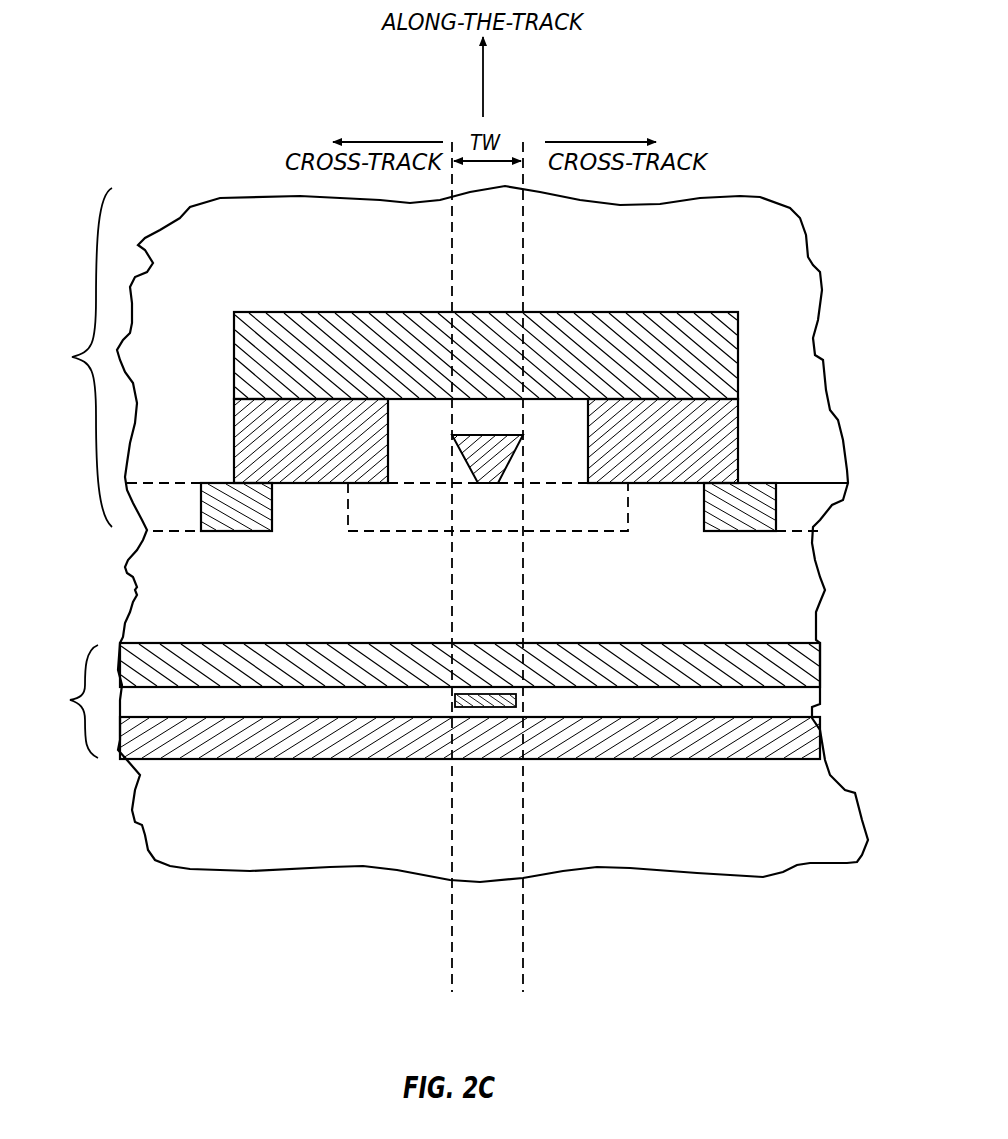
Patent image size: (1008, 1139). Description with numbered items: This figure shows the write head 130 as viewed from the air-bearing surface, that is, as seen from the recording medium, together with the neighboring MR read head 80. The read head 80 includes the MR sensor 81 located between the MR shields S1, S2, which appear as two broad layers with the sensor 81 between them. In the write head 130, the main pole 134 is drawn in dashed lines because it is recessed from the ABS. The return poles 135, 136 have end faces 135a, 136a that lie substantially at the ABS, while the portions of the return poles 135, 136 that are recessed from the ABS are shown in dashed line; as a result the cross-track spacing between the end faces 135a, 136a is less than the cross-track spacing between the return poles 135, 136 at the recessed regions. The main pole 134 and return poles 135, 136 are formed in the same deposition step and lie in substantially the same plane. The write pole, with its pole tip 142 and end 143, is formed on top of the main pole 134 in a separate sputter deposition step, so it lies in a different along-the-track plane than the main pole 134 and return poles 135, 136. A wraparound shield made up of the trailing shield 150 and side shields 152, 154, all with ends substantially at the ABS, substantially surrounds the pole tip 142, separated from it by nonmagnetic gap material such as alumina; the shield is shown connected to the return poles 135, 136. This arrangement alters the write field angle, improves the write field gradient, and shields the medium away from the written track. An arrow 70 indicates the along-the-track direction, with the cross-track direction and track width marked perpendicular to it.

The along-the-track direction arrow 70 is at (485, 82).
The write head 130 is at (71, 357).
The trailing shield 150 is at (722, 352).
The side shield 152 is at (725, 446).
The side shield 154 is at (253, 458).
The write pole tip 142 is at (462, 456).
The write pole end 143 is at (510, 458).
The main pole 134 is at (556, 535).
The return pole 135 is at (173, 534).
The return pole end face 135a is at (256, 535).
The return pole 136 is at (817, 509).
The return pole end face 136a is at (720, 533).
The MR read head 80 is at (67, 701).
The MR shield S2 is at (808, 669).
The MR shield S1 is at (802, 734).
The MR sensor 81 is at (517, 700).